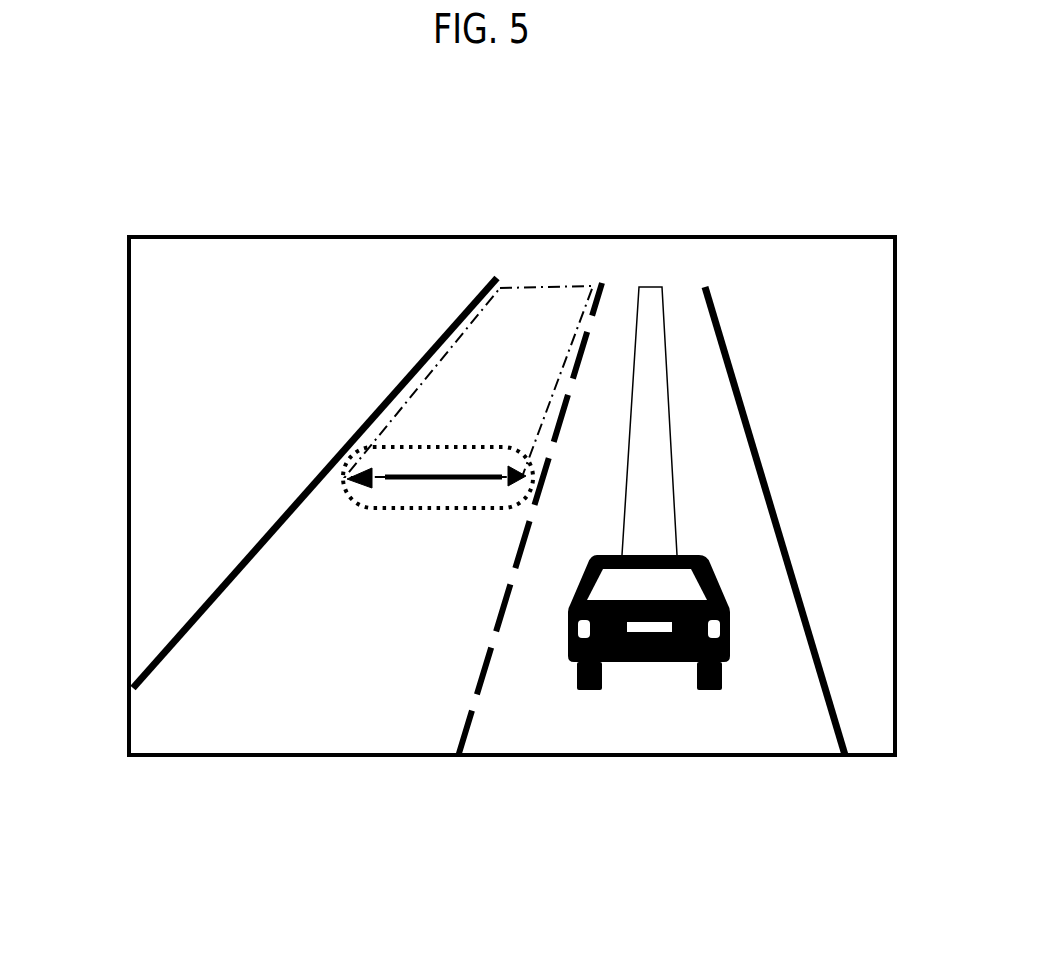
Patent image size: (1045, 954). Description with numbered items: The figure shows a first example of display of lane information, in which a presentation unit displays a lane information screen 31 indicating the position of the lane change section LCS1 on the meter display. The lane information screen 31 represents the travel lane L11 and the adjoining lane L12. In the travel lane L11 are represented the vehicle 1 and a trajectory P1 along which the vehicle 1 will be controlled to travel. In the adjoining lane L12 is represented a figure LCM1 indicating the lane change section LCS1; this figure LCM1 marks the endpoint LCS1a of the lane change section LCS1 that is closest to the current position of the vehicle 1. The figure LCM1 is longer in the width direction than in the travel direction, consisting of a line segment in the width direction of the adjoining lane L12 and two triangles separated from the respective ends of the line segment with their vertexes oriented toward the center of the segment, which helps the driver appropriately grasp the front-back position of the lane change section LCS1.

The lane information screen 31 is at (797, 237).
The vehicle 1 is at (728, 623).
The trajectory P1 is at (675, 472).
The travel lane L11 is at (677, 730).
The adjoining lane L12 is at (325, 732).
The lane change section LCS1 is at (483, 367).
The endpoint of the lane change section LCS1a is at (408, 473).
The figure LCM1 is at (340, 476).